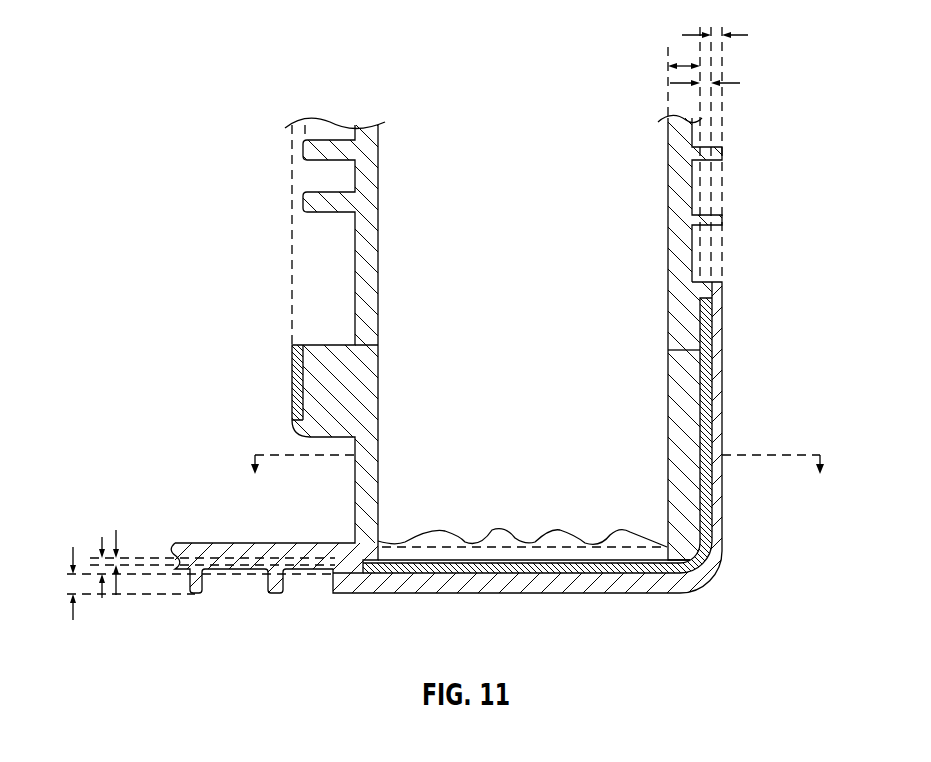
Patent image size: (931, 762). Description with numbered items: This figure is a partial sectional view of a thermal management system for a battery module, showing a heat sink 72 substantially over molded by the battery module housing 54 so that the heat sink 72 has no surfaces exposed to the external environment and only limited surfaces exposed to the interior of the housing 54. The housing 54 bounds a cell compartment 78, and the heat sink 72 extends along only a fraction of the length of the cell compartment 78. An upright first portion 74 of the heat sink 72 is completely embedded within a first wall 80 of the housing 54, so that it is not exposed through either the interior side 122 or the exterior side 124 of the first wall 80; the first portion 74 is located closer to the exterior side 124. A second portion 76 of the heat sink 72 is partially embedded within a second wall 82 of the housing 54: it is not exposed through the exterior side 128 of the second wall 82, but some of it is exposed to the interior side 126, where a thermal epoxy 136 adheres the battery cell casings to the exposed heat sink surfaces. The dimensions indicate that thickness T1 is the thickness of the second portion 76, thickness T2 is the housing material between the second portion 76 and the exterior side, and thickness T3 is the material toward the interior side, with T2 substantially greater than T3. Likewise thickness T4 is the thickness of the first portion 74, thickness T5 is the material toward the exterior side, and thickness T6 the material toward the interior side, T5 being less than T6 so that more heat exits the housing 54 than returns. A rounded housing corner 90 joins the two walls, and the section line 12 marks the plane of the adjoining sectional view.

The section line 12- 12 is at (538, 482).
The battery module housing 54 is at (386, 583).
The heat sink 72 is at (665, 547).
The first portion 74 is at (712, 376).
The second portion 76 is at (512, 574).
The cell compartment 78 is at (525, 373).
The first wall 80 is at (676, 289).
The second wall 82 is at (343, 573).
The outer corner 90 is at (716, 580).
The interior side 122 is at (667, 425).
The exterior side 124 is at (723, 309).
The interior side 126 is at (457, 594).
The exterior side 128 is at (447, 560).
The thermal epoxy 136 is at (382, 549).
The thickness T1 is at (100, 537).
The thickness T2 is at (74, 621).
The thickness T3 is at (118, 531).
The thickness T4 is at (740, 85).
The thickness T5 is at (746, 35).
The thickness T6 is at (685, 65).